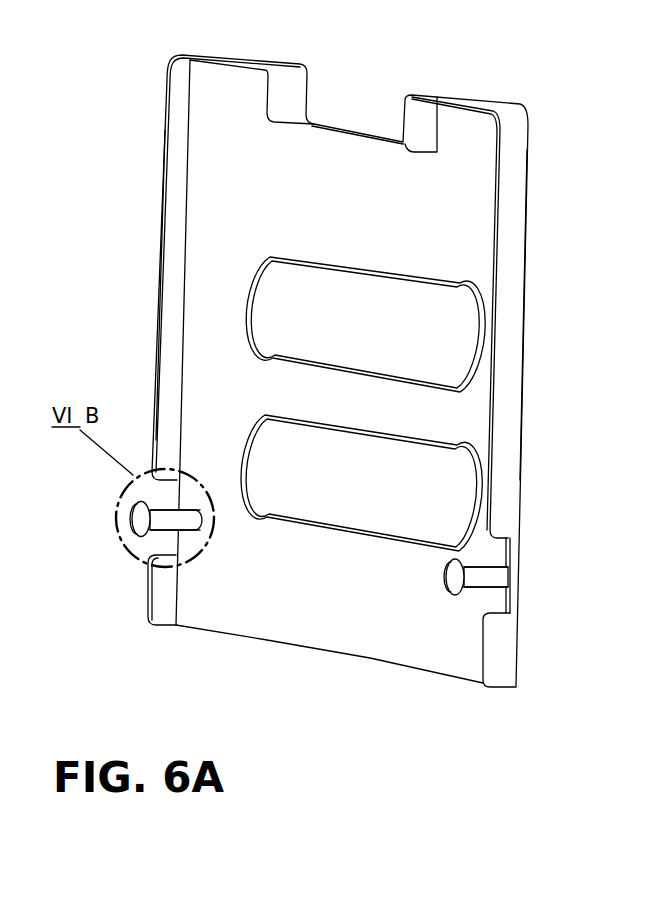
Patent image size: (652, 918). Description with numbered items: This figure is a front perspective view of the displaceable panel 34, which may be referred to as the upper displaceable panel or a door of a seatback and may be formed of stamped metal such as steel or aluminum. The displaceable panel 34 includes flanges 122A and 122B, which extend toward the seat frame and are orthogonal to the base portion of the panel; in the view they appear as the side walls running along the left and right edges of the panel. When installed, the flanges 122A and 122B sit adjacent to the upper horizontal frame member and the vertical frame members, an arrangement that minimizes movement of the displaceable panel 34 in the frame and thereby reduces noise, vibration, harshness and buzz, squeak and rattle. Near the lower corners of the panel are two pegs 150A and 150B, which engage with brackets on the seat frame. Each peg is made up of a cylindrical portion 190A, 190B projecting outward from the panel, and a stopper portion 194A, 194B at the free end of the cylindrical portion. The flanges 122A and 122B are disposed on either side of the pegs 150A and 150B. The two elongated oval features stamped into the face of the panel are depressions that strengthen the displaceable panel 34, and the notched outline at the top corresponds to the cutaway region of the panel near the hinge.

The displaceable panel 34 is at (443, 207).
The flange 122A is at (177, 220).
The flange 122B is at (512, 269).
The peg 150A is at (182, 527).
The peg 150B is at (497, 575).
The cylindrical portion 190A is at (158, 508).
The cylindrical portion 190B is at (477, 563).
The stopper portion 194A is at (137, 523).
The stopper portion 194B is at (450, 580).